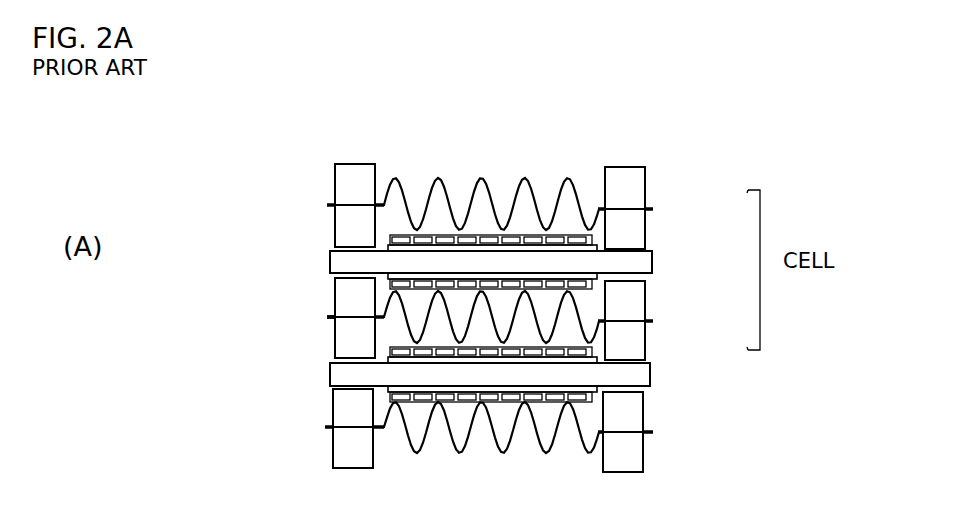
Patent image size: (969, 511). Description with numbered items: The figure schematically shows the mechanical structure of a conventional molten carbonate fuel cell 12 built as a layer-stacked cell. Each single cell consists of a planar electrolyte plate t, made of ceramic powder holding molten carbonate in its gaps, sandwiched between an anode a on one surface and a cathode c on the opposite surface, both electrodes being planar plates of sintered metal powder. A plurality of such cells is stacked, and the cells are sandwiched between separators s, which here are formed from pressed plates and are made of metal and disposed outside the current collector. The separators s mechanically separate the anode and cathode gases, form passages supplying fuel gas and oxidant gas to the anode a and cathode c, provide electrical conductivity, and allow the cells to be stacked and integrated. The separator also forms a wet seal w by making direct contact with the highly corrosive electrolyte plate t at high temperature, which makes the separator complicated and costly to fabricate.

The molten carbonate fuel cell 12 is at (231, 201).
The cathode c is at (587, 246).
The electrolyte plate t is at (633, 263).
The anode a is at (585, 279).
The separator s is at (318, 324).
The wet seal w is at (316, 390).